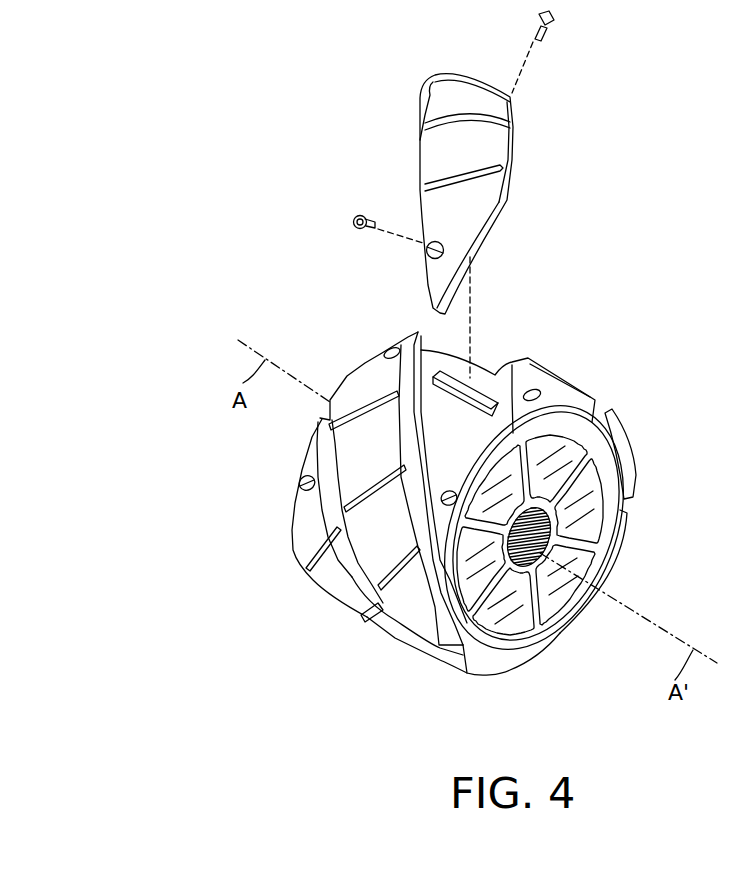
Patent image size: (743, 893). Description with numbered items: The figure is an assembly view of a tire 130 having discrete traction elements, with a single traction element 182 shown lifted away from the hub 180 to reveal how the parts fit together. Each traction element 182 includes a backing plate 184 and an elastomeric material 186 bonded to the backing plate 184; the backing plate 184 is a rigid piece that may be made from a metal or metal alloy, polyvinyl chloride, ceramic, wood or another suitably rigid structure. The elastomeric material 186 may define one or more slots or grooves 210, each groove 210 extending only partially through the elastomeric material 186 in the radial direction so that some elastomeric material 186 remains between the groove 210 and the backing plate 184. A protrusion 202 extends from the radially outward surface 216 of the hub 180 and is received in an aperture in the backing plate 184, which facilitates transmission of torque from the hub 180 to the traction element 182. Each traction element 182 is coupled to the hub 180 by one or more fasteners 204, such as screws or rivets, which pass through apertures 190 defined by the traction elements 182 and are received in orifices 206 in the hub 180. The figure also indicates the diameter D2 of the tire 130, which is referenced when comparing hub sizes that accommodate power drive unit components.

The tire 130 is at (230, 224).
The hub 180 is at (600, 543).
The traction element 182 is at (437, 101).
The backing plate 184 is at (500, 215).
The elastomeric material 186 is at (472, 166).
The aperture 190 is at (290, 481).
The protrusion 202 is at (480, 392).
The fastener 204 is at (355, 212).
The orifice 206 is at (456, 483).
The groove 210 is at (303, 578).
The radially outward surface 216 is at (451, 424).
The diameter of tire D2 is at (504, 613).